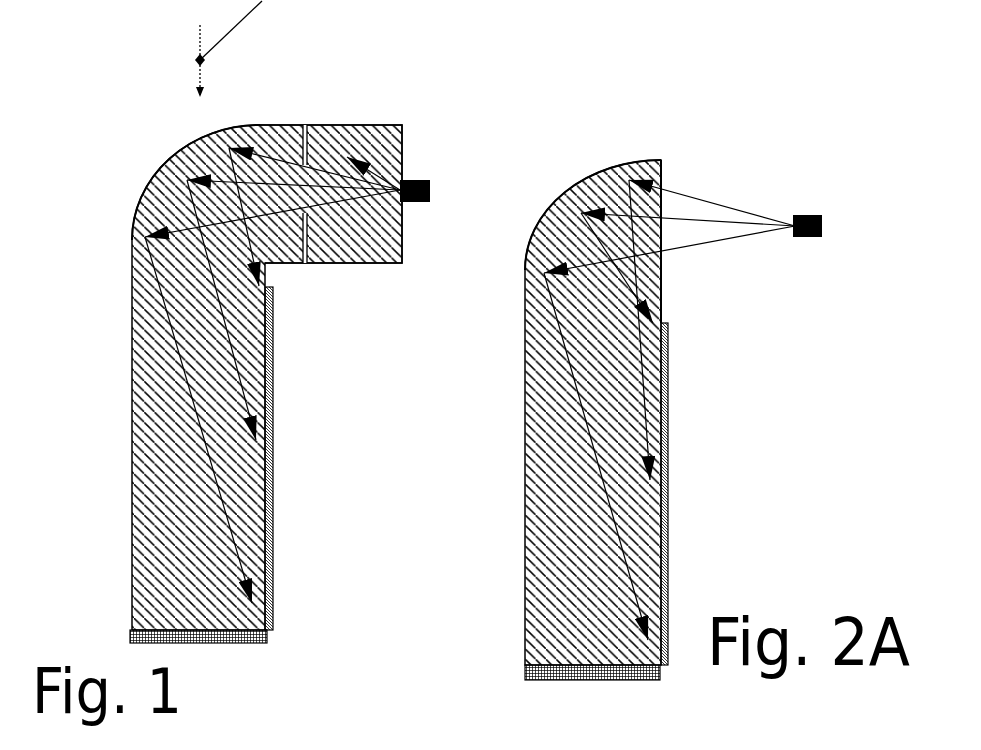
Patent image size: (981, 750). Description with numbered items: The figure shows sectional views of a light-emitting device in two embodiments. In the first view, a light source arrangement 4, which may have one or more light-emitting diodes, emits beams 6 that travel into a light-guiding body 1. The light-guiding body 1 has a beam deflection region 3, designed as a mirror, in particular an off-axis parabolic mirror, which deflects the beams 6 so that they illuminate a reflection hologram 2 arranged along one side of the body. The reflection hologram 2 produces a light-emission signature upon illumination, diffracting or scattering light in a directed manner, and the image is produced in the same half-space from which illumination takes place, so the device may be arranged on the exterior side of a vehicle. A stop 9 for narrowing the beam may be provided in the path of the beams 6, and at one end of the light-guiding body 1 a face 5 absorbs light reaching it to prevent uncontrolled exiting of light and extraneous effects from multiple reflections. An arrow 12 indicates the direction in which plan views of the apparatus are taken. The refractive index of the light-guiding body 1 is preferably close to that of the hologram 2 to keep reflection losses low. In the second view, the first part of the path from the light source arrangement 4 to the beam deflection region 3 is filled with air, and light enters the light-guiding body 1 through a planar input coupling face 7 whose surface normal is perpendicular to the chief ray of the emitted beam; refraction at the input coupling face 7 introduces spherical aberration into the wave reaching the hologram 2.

In FIG. 1, the light-guiding body 1 is at (111, 394).
In FIG. 2A, the light-guiding body 1 is at (522, 505).
In FIG. 1, the reflection hologram 2 is at (293, 473).
In FIG. 2A, the reflection hologram 2 is at (664, 513).
In FIG. 1, the beam deflection region 3 is at (157, 159).
In FIG. 2A, the beam deflection region 3 is at (583, 190).
In FIG. 1, the light source arrangement 4 is at (422, 155).
In FIG. 2A, the light source arrangement 4 is at (802, 213).
In FIG. 1, the face 5 is at (220, 658).
In FIG. 2A, the face 5 is at (653, 678).
In FIG. 1, the beams 6 is at (362, 126).
In FIG. 2A, the input coupling face 7 is at (694, 218).
In FIG. 1, the stop 9 is at (305, 105).
In FIG. 1, the arrow 12 is at (242, 48).